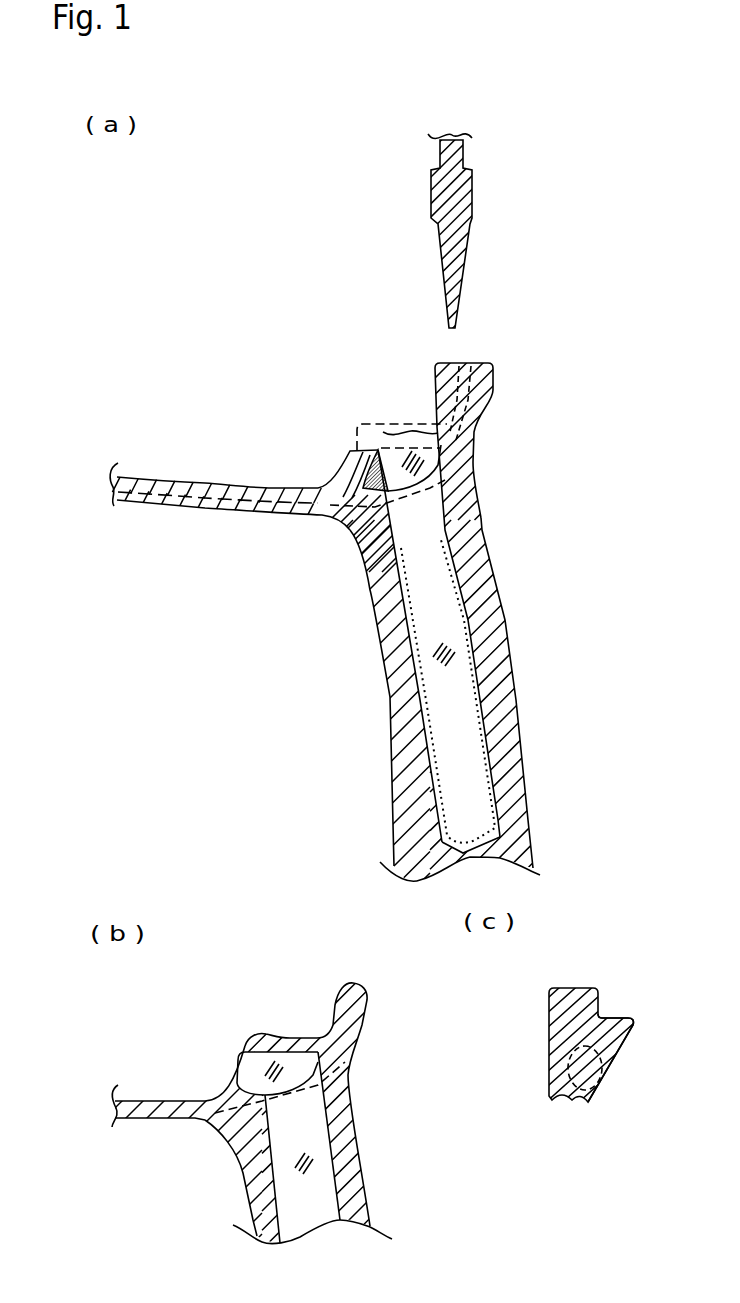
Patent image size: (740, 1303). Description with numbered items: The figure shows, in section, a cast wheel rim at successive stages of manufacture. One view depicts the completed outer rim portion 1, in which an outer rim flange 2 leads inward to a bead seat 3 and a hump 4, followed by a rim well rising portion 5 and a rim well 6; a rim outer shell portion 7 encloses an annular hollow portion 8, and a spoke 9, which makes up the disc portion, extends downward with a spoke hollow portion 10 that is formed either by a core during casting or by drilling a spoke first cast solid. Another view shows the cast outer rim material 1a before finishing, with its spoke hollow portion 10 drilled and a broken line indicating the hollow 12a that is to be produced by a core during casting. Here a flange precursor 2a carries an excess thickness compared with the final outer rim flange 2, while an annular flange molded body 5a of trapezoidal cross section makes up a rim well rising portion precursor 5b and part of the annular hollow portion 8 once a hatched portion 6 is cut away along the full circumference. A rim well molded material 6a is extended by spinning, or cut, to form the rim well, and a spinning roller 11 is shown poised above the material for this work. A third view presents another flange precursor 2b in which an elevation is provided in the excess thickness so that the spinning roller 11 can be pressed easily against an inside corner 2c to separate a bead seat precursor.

The outer rim portion 1 is at (238, 1002).
The cast outer rim material 1a is at (283, 390).
The outer rim flange 2 is at (481, 405).
The flange precursor 2a is at (462, 360).
The flange precursor 2b is at (567, 1008).
The inside corner 2c is at (612, 993).
The bead seat 3 is at (287, 1043).
The hump 4 is at (248, 1035).
The rim well rising portion 5 is at (236, 1075).
The annular flange molded body 5a is at (342, 469).
The rim well rising portion precursor 5b is at (352, 449).
The hatched portion 6 is at (377, 450).
The rim well molded material 6a is at (247, 520).
The rim outer shell portion 7 is at (287, 1096).
The annular hollow portion 8 is at (416, 465).
The spoke 9 is at (478, 572).
The spoke hollow portion 10 is at (450, 643).
The spinning roller 11 is at (453, 208).
The hole 12a is at (417, 426).